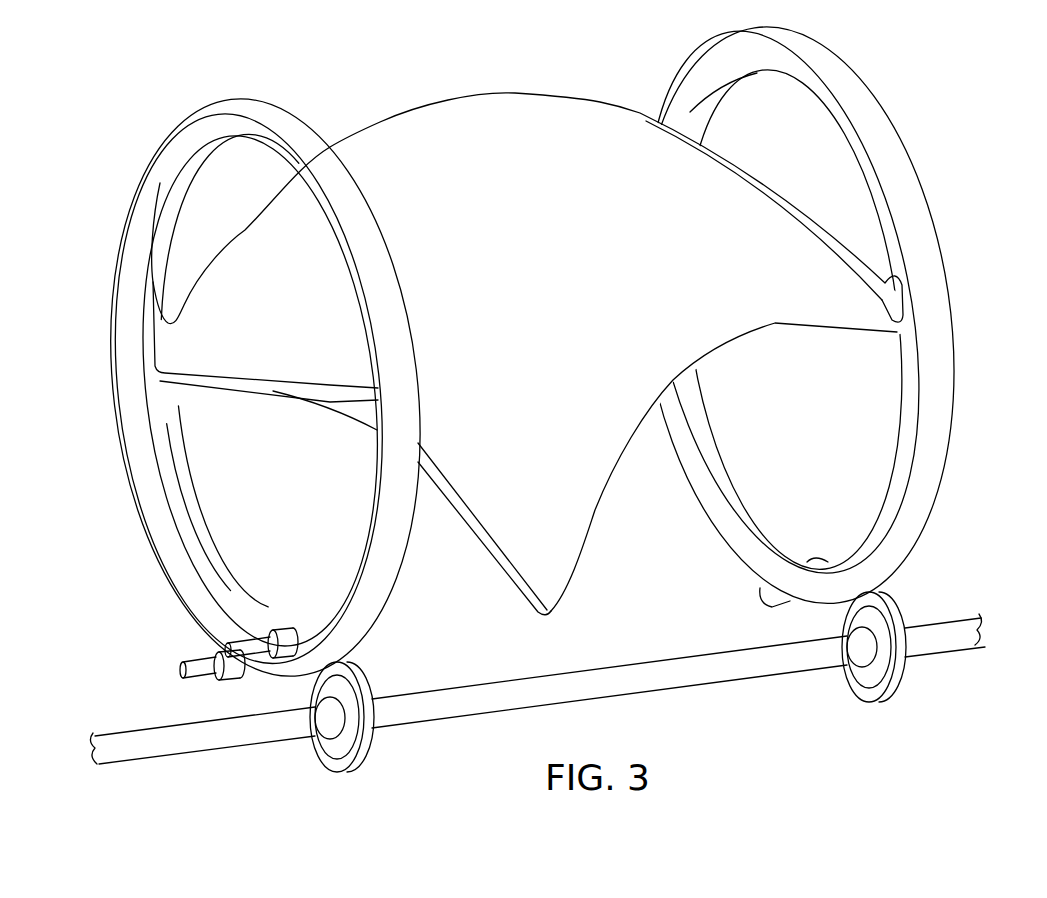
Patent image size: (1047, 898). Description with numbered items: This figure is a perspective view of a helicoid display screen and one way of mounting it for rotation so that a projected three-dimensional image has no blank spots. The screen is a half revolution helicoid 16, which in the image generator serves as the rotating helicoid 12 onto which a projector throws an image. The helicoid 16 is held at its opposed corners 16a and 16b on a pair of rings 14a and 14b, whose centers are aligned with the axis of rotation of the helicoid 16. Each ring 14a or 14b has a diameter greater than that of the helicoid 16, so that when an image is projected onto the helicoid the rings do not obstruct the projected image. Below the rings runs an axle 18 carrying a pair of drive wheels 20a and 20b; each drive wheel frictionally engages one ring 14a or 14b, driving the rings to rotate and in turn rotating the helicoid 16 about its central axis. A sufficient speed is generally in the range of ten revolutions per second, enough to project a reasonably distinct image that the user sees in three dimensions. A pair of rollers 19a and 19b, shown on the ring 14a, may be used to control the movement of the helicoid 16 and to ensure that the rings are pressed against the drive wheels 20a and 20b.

The rotating helicoid 12 is at (573, 63).
The ring 14a is at (237, 103).
The ring 14b is at (871, 82).
The half revolution helicoid 16 is at (490, 93).
The corner 16a is at (182, 352).
The corner 16b is at (877, 320).
The axle 18 is at (228, 749).
The roller 19a is at (233, 674).
The roller 19b is at (281, 636).
The drive wheel 20a is at (366, 676).
The drive wheel 20b is at (899, 605).